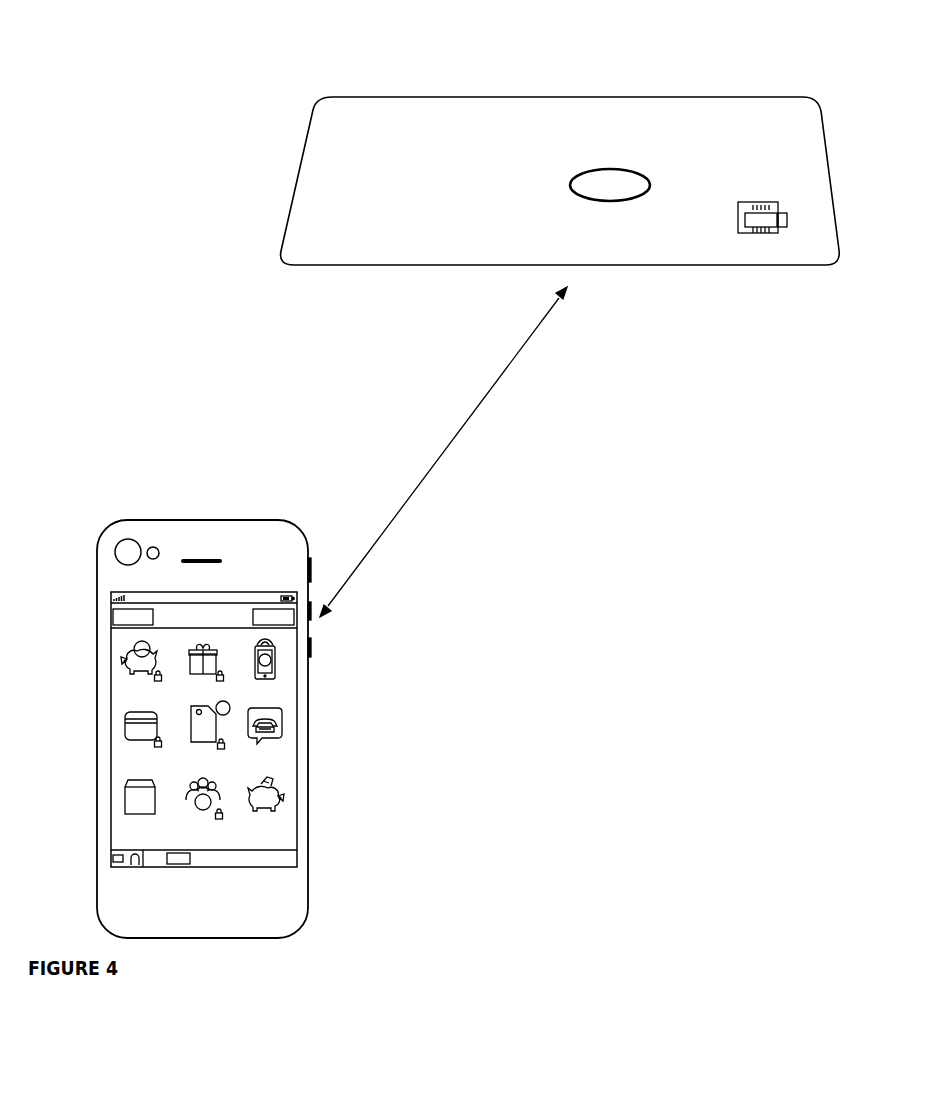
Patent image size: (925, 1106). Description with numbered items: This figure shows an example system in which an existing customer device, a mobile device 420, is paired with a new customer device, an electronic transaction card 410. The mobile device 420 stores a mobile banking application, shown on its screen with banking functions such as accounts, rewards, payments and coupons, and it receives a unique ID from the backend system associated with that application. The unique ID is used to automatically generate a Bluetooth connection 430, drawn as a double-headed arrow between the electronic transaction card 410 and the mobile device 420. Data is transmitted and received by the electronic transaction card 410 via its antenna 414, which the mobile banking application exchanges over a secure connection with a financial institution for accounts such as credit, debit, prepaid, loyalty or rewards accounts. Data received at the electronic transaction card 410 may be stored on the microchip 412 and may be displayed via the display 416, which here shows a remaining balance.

The electronic transaction card 410 is at (427, 50).
The microchip 412 is at (765, 233).
The antenna 414 is at (355, 244).
The display 416 is at (370, 200).
The mobile device 420 is at (325, 713).
The Bluetooth connection 430 is at (417, 490).